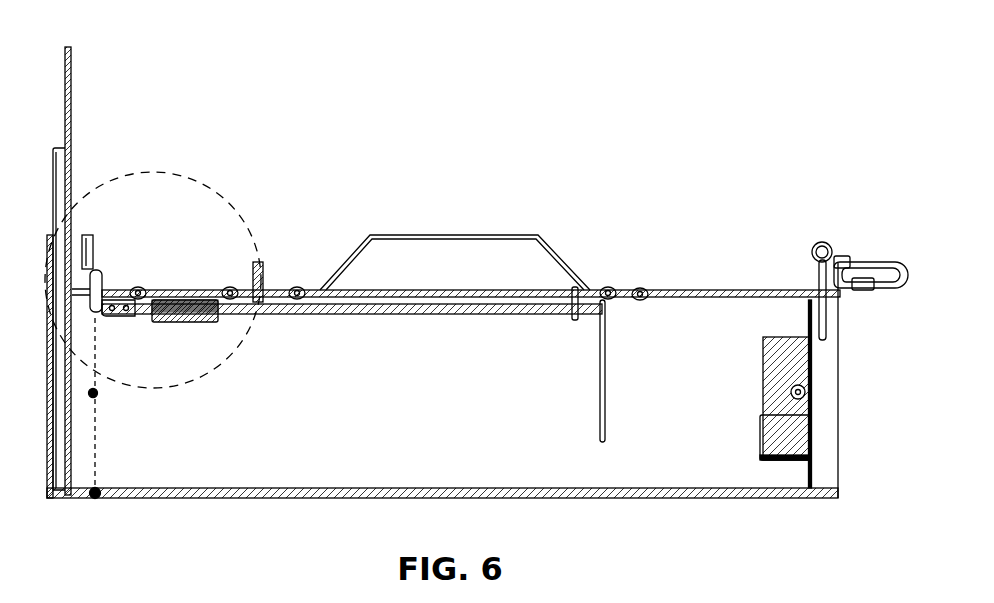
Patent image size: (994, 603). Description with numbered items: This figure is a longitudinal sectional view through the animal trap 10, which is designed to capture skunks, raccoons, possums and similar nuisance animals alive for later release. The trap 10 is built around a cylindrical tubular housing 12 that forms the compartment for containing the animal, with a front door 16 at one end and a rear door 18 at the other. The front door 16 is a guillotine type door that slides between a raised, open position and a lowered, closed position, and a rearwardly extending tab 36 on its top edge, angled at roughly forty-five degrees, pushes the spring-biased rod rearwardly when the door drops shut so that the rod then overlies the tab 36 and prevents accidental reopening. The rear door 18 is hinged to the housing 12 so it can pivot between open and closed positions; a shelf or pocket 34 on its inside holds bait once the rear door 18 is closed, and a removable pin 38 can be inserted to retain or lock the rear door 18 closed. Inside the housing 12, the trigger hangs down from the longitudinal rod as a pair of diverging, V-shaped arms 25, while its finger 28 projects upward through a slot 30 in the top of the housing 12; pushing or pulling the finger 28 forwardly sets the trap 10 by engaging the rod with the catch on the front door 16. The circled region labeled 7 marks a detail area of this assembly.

The animal trap 10 is at (256, 130).
The detail region 7 is at (236, 195).
The housing 12 is at (708, 290).
The front door 16 is at (71, 53).
The rear door 18 is at (814, 472).
The diverging arms 25 is at (598, 392).
The finger 28 is at (247, 288).
The slot 30 is at (279, 288).
The shelf or pocket 34 is at (762, 440).
The tab 36 is at (71, 99).
The removable pin 38 is at (818, 280).